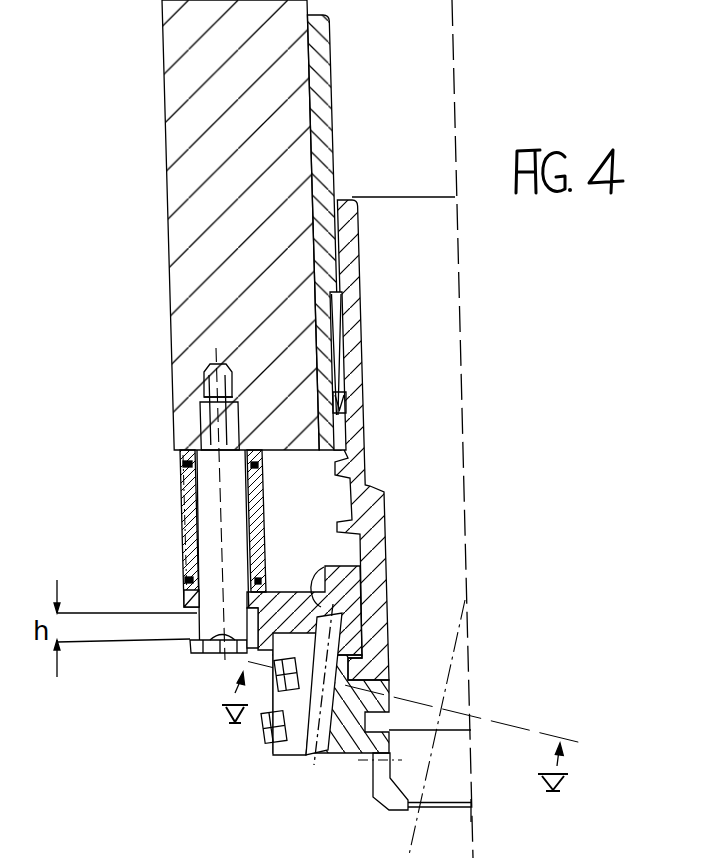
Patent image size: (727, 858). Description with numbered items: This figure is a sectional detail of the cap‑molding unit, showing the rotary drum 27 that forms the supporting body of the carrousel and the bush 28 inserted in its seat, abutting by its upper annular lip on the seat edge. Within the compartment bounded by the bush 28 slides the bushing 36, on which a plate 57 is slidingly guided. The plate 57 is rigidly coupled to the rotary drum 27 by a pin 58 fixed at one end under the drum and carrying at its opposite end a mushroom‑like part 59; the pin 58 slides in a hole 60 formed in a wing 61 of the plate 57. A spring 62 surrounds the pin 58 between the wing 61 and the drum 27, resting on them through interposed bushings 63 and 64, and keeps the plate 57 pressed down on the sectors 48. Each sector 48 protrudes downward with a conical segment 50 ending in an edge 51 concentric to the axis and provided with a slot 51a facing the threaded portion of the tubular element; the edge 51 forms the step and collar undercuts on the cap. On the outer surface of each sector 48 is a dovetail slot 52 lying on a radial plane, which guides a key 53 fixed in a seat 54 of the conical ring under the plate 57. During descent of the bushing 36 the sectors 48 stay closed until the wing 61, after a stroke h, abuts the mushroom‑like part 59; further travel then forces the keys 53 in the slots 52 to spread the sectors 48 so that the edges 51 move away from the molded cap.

The rotary drum 27 is at (182, 290).
The bush 28 is at (320, 78).
The bushing 36 is at (378, 575).
The sectors 48 is at (352, 704).
The conical segment 50 is at (388, 805).
The edge 51 is at (407, 812).
The slot 51a is at (471, 808).
The dovetail slot 52 is at (357, 566).
The keys 53 is at (325, 750).
The seats 54 is at (302, 752).
The plate 57 is at (273, 598).
The pin 58 is at (207, 502).
The mushroom-like part 59 is at (215, 650).
The hole 60 is at (198, 598).
The wing 61 is at (180, 603).
The spring 62 is at (257, 497).
The bushing 63 is at (182, 462).
The bushing 64 is at (185, 585).